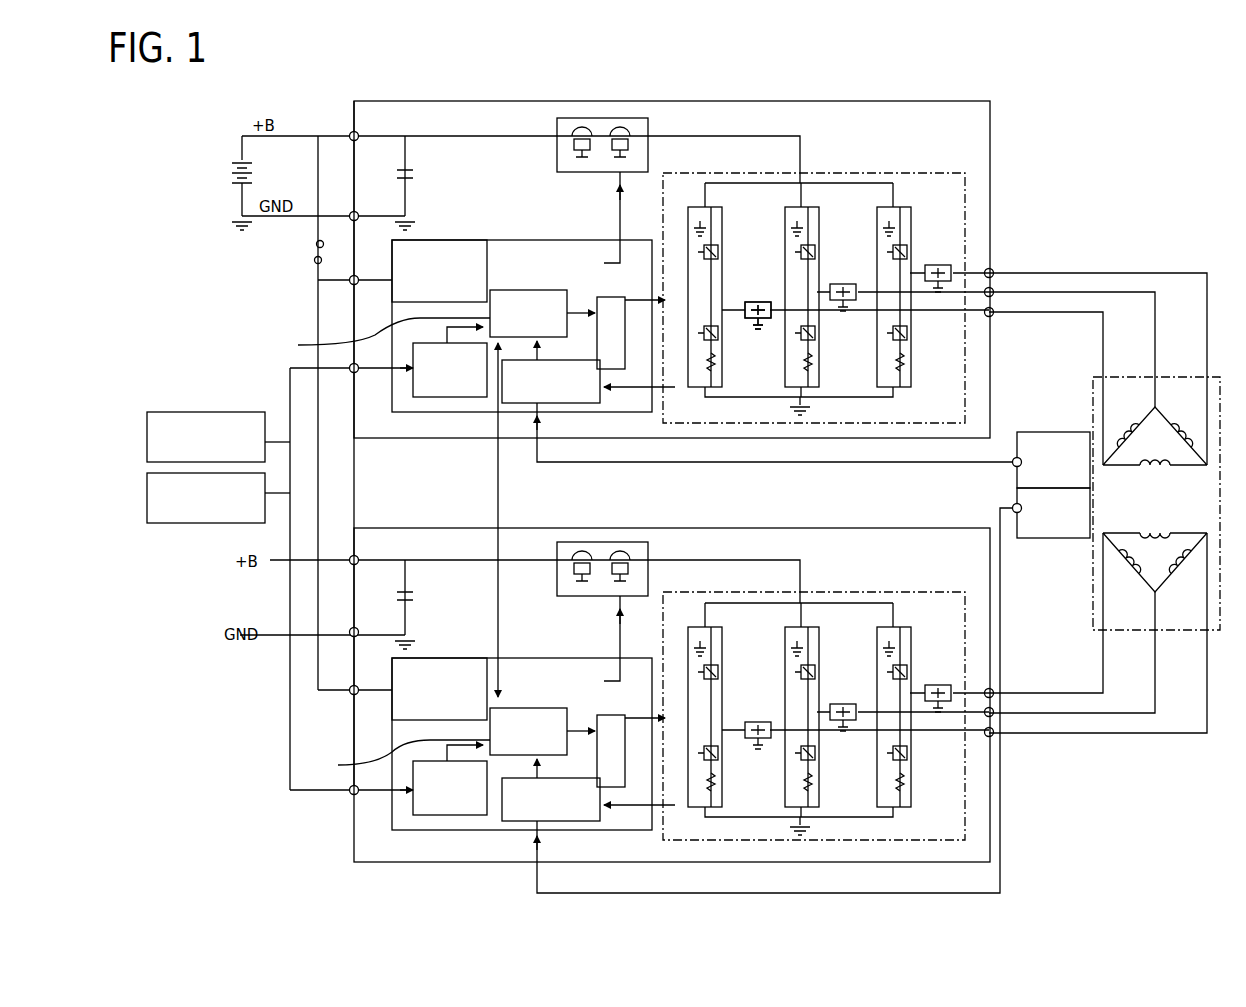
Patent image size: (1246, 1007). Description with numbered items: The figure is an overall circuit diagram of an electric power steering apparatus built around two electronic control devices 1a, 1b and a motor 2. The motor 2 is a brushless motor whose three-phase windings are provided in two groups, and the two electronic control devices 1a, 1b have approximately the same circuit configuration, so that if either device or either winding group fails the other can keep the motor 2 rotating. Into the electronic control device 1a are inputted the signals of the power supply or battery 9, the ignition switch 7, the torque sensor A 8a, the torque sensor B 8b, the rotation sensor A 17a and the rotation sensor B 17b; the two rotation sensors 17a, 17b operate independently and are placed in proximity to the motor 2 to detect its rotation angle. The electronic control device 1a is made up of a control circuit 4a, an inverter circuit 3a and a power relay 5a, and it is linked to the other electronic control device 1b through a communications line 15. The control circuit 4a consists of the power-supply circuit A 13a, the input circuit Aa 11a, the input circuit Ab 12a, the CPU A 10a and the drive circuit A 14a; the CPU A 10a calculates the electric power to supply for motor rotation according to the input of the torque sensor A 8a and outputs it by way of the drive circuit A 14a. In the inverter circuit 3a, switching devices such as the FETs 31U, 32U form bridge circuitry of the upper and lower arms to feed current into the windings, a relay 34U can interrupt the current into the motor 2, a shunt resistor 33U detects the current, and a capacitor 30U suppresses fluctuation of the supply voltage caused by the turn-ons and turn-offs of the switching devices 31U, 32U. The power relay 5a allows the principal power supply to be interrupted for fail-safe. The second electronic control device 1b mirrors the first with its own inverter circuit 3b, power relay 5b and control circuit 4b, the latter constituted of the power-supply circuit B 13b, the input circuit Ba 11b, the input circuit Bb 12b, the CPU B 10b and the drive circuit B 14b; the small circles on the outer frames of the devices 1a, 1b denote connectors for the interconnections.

The electronic control device 1a is at (685, 270).
The electronic control device 1b is at (685, 719).
The motor 2 is at (1172, 377).
The inverter circuit 3a is at (828, 238).
The inverter circuit 3b is at (880, 842).
The control circuit 4a is at (687, 341).
The control circuit 4b is at (692, 723).
The power relay 5a is at (598, 117).
The power relay 5b is at (608, 545).
The ignition switch 7 is at (316, 255).
The torque sensor A 8a is at (190, 412).
The torque sensor B 8b is at (173, 523).
The power supply (battery) 9 is at (240, 160).
The CPU A 10a is at (372, 337).
The CPU B 10b is at (393, 760).
The input circuit Aa 11a is at (541, 438).
The input circuit Ba 11b is at (568, 862).
The input circuit Ab 12a is at (413, 413).
The input circuit Bb 12b is at (428, 822).
The power-supply circuit A 13a is at (687, 341).
The power-supply circuit B 13b is at (692, 723).
The drive circuit A 14a is at (605, 263).
The drive circuit B 14b is at (612, 688).
The communications line 15 is at (493, 499).
The rotation sensor A 17a is at (1040, 431).
The rotation sensor B 17b is at (1055, 538).
The capacitor 30U is at (722, 281).
The switching device (FET) 31U is at (725, 242).
The switching device (FET) 32U is at (718, 335).
The shunt resistor 33U is at (720, 388).
The relay 34U is at (755, 302).